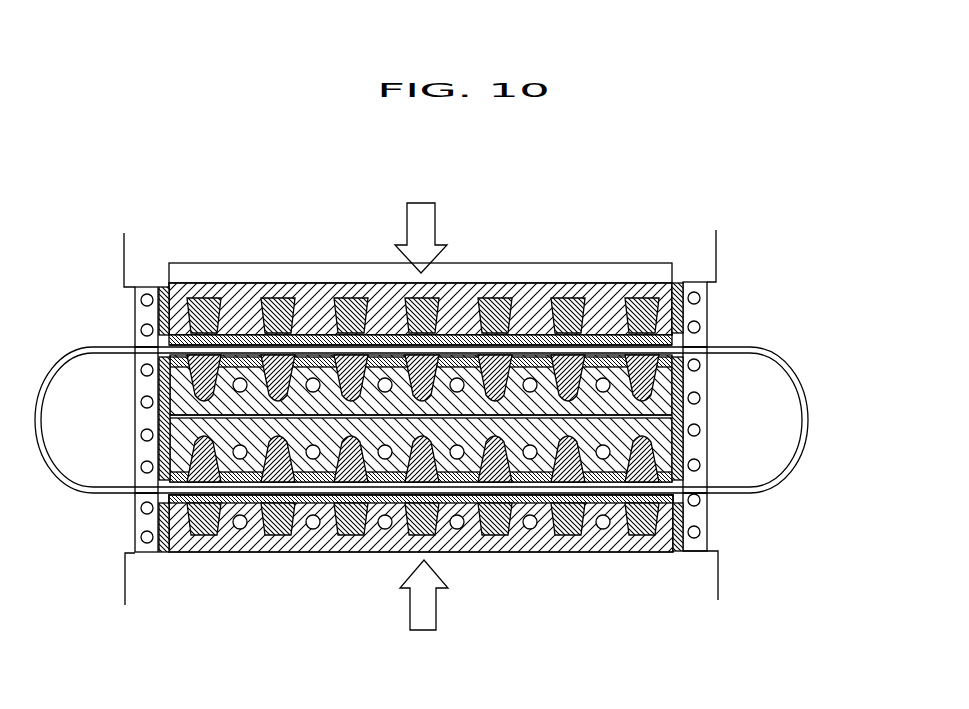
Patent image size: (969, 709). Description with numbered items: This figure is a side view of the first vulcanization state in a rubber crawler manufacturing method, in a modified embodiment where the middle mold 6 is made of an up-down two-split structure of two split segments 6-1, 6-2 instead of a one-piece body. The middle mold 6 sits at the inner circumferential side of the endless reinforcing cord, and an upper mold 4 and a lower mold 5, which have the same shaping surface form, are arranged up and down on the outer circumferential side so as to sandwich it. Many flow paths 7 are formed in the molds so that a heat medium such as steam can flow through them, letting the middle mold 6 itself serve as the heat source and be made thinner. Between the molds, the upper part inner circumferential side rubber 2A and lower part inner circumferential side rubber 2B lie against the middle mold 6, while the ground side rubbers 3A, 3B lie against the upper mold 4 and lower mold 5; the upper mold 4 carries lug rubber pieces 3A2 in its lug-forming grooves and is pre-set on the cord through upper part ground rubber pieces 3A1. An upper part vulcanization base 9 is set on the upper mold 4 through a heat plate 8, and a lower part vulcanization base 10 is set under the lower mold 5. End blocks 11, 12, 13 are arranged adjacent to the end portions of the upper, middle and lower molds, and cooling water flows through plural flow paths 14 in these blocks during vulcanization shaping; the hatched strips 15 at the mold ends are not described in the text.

The upper part inner circumferential side rubber 2A is at (176, 381).
The lower part inner circumferential side rubber 2B is at (184, 455).
The ground side rubber 3A is at (170, 322).
The upper part ground rubber piece 3A1 is at (528, 335).
The lug rubber piece 3A2 is at (497, 344).
The ground side rubber 3B is at (170, 522).
The upper mold 4 is at (601, 305).
The lower mold 5 is at (600, 545).
The middle mold 6 is at (878, 364).
The split segment 6-1 is at (705, 392).
The split segment 6-2 is at (705, 445).
The flow path 7 is at (457, 387).
The heat plate 8 is at (280, 263).
The upper part vulcanization base 9 is at (708, 250).
The lower part vulcanization base 10 is at (714, 582).
The end block 11 is at (149, 287).
The end block 12 is at (136, 382).
The end block 13 is at (135, 520).
The flow path 14 is at (141, 330).
The insulating strip 15 is at (676, 285).